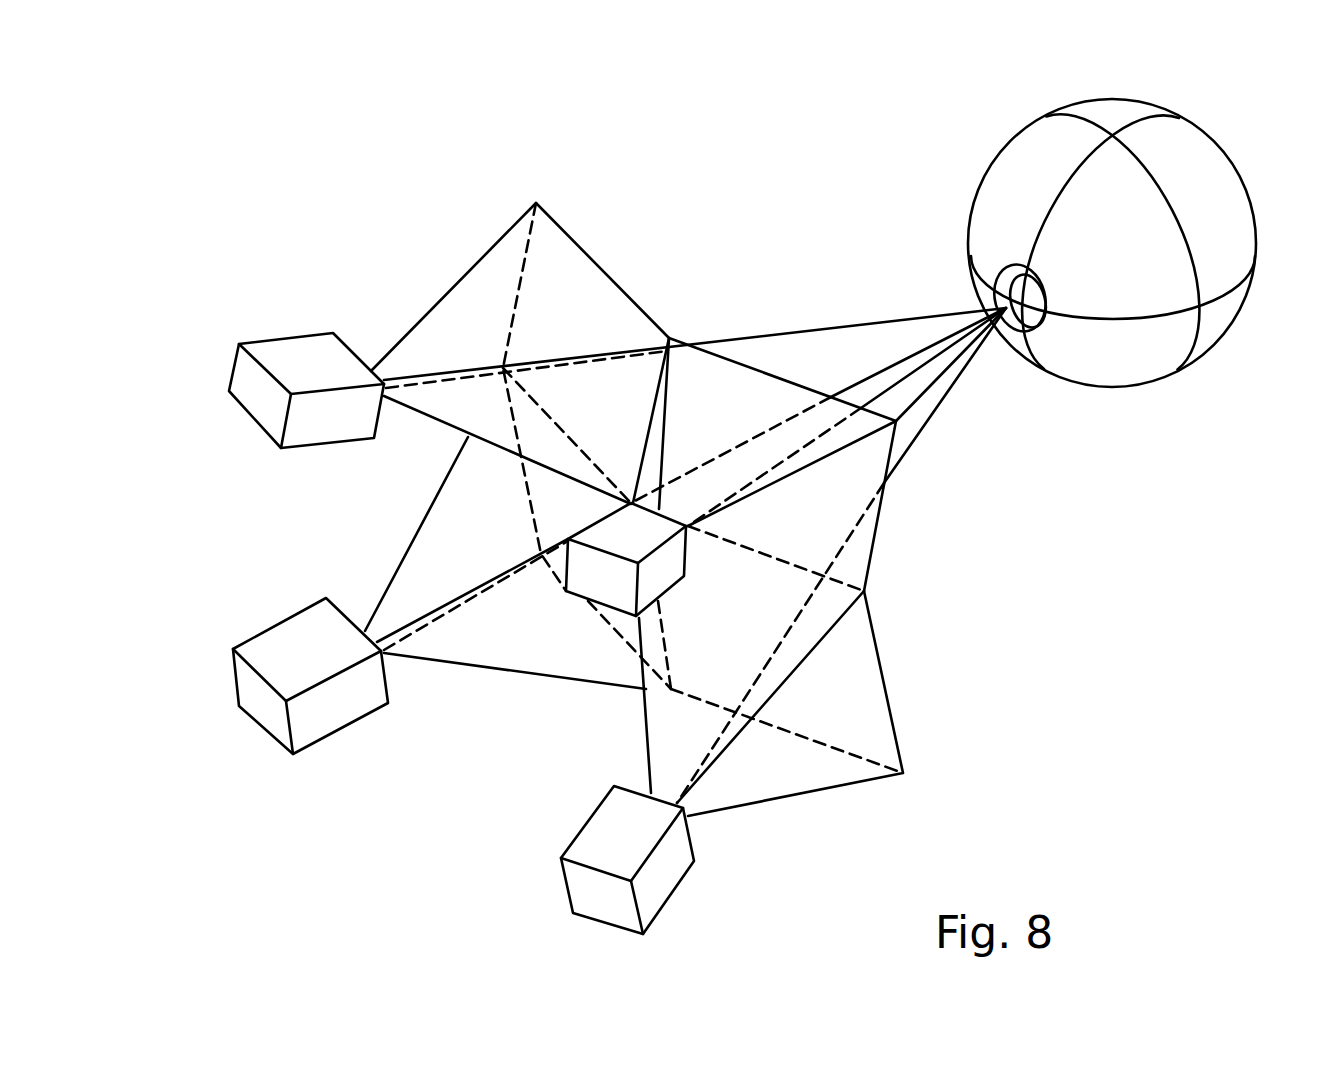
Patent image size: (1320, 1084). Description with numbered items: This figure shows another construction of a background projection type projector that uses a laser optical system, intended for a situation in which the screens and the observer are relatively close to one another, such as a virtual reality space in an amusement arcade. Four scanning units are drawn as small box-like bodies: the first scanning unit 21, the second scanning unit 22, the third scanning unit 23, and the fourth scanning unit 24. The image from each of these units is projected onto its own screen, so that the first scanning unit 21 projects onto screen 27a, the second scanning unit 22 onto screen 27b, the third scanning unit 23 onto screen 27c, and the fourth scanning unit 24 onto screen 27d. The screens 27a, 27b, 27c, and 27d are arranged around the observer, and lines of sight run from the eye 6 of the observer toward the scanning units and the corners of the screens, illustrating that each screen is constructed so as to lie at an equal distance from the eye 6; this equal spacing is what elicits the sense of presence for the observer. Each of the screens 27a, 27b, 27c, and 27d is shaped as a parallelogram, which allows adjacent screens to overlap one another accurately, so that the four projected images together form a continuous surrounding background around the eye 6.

The eye 6 is at (1127, 365).
The first scanning unit 21 is at (268, 420).
The second scanning unit 22 is at (580, 575).
The third scanning unit 23 is at (272, 717).
The fourth scanning unit 24 is at (577, 878).
The screen 27a is at (593, 262).
The screen 27b is at (763, 370).
The screen 27c is at (523, 497).
The screen 27d is at (878, 657).